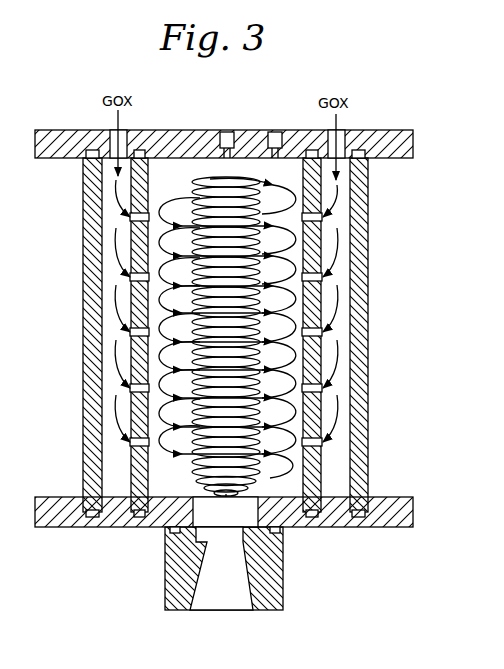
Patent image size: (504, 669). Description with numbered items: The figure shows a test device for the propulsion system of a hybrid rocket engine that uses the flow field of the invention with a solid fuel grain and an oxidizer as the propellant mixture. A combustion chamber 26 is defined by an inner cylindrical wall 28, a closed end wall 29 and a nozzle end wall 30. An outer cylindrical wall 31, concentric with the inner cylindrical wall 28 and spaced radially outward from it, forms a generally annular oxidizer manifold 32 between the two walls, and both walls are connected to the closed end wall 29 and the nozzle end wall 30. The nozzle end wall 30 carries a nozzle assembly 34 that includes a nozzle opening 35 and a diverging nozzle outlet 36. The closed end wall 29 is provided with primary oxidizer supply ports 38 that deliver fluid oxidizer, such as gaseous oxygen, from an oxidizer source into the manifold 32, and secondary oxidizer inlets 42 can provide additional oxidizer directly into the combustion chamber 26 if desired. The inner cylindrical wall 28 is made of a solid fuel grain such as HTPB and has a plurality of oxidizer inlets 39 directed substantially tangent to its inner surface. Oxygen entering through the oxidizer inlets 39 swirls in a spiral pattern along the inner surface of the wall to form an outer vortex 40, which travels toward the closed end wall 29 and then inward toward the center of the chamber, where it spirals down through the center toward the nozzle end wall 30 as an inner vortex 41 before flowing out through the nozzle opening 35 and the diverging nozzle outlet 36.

The combustion chamber 26 is at (290, 178).
The inner cylindrical wall 28 is at (325, 238).
The closed end wall 29 is at (178, 142).
The nozzle end wall 30 is at (108, 521).
The outer cylindrical wall 31 is at (358, 315).
The annular oxidizer manifold 32 is at (337, 395).
The nozzle assembly 34 is at (262, 553).
The nozzle opening 35 is at (215, 512).
The diverging nozzle outlet 36 is at (250, 592).
The primary oxidizer supply ports 38 is at (110, 136).
The oxidizer inlets 39 is at (130, 348).
The outer vortex 40 is at (160, 246).
The inner vortex 41 is at (130, 452).
The secondary oxidizer inlets 42 is at (276, 132).